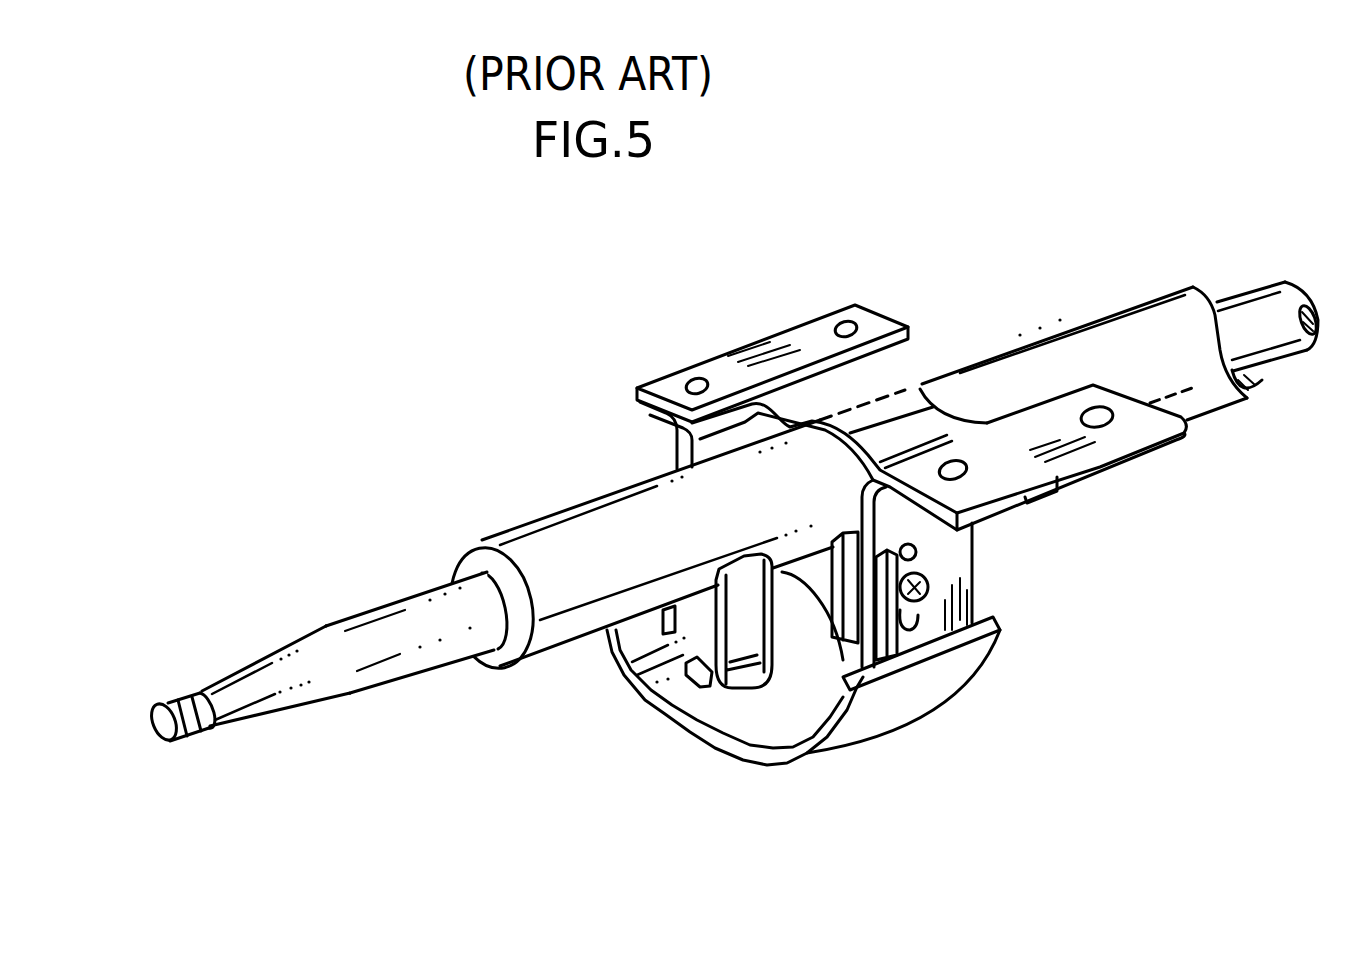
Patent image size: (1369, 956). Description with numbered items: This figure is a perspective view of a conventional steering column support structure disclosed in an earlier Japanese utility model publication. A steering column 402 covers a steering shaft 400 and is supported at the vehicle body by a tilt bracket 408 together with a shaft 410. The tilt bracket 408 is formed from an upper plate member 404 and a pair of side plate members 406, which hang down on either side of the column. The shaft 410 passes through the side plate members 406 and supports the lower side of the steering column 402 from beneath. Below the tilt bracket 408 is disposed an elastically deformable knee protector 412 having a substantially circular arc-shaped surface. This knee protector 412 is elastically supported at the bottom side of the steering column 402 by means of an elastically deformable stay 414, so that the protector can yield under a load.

The steering shaft 400 is at (1259, 314).
The steering column 402 is at (1213, 386).
The upper plate member 404 is at (913, 430).
The side plate members 406 is at (683, 450).
The tilt bracket 408 is at (801, 321).
The shaft 410 is at (815, 583).
The knee protector 412 is at (953, 663).
The stay 414 is at (700, 683).